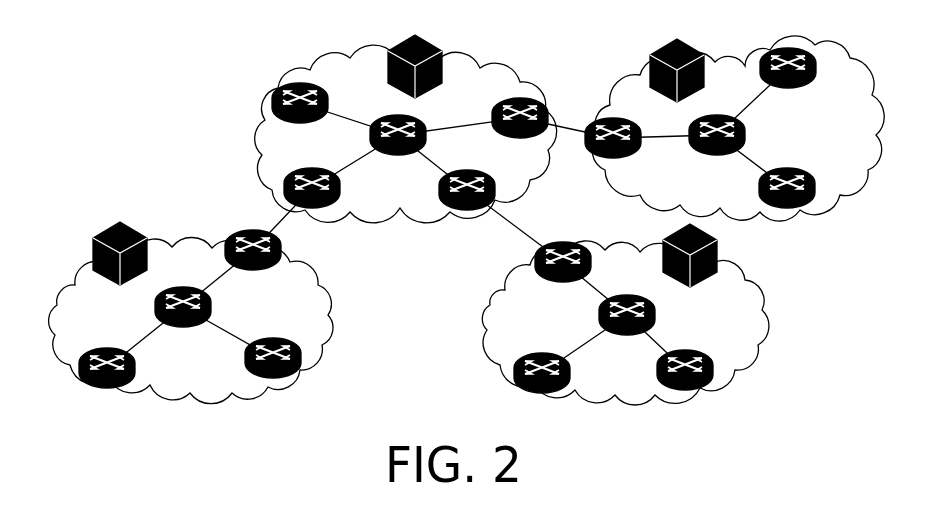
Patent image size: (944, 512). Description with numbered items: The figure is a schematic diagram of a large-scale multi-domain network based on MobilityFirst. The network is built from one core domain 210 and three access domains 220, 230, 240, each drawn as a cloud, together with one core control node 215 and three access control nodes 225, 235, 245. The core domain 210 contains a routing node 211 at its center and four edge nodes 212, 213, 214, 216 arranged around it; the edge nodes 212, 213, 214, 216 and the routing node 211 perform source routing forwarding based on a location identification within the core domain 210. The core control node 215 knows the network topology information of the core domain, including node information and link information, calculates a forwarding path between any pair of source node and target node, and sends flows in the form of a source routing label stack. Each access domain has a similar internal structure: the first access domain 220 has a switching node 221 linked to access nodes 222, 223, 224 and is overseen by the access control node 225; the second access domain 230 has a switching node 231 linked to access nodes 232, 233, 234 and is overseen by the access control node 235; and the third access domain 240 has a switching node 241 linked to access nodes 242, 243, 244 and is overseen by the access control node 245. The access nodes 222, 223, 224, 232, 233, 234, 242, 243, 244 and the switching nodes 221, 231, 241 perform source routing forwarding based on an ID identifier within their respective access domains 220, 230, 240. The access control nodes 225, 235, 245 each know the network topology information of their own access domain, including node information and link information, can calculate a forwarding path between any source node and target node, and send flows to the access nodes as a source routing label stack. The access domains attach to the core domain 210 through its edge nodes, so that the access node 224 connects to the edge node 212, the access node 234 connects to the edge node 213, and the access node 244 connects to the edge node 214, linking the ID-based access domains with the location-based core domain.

The core domain 210 is at (344, 154).
The routing node 211 is at (418, 120).
The edge node 212 is at (342, 186).
The edge node 213 is at (497, 191).
The edge node 214 is at (540, 104).
The core control node 215 is at (441, 50).
The edge node 216 is at (306, 84).
The access domain 220 is at (126, 326).
The switching node 221 is at (208, 306).
The access node 222 is at (132, 365).
The access node 223 is at (296, 357).
The access node 224 is at (278, 247).
The access control node 225 is at (136, 235).
The access domain 230 is at (564, 328).
The switching node 231 is at (653, 313).
The access node 232 is at (568, 369).
The access node 233 is at (710, 370).
The access node 234 is at (573, 248).
The access control node 235 is at (711, 246).
The access domain 240 is at (694, 180).
The switching node 241 is at (748, 130).
The access node 242 is at (786, 170).
The access node 243 is at (805, 55).
The access node 244 is at (632, 128).
The access control node 245 is at (694, 50).